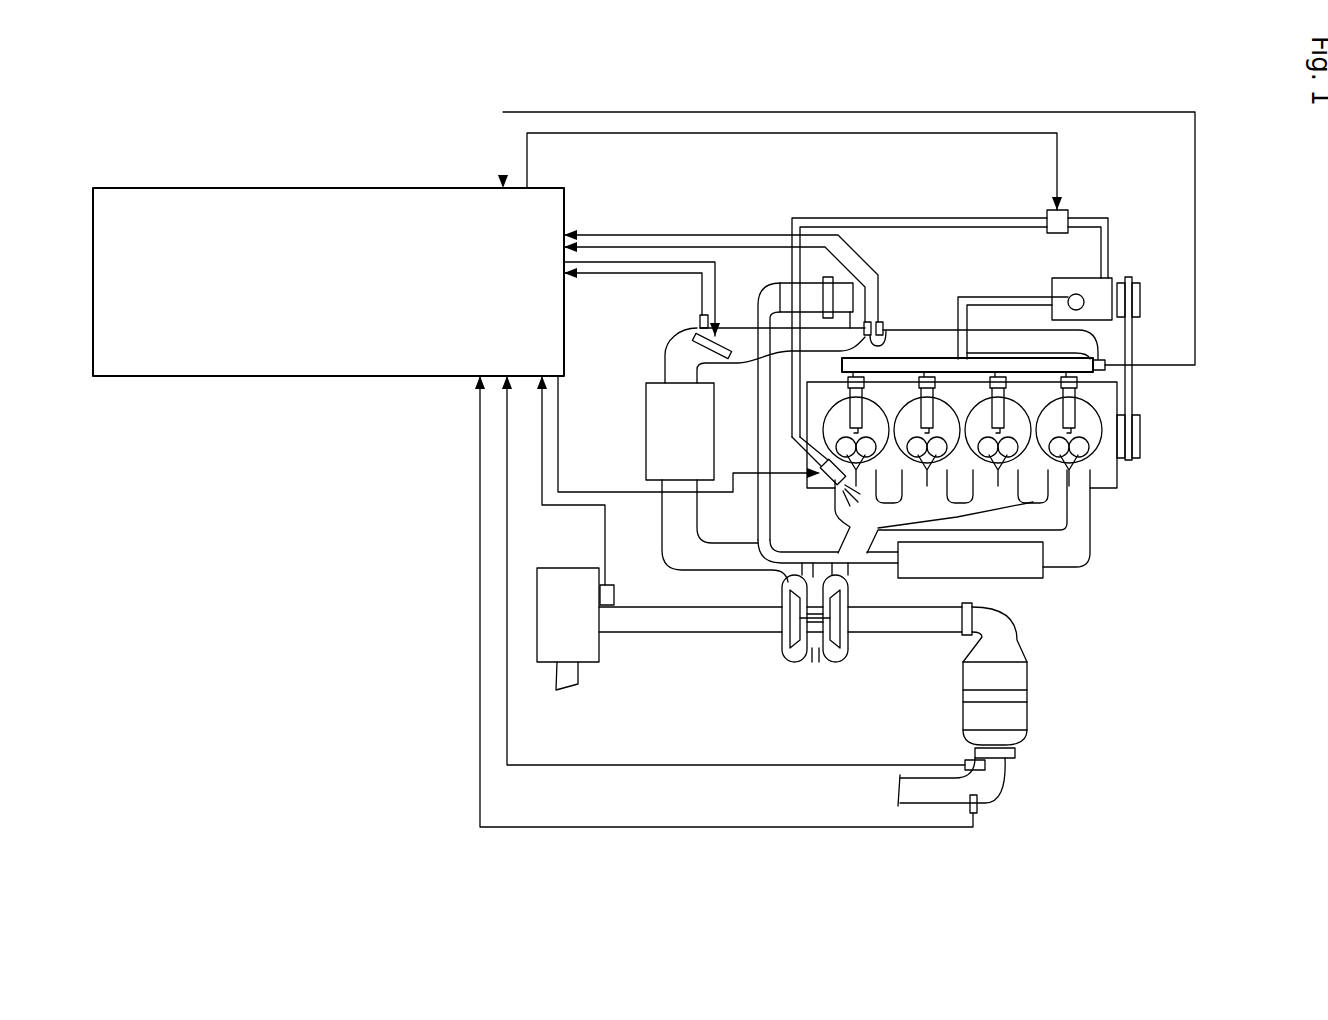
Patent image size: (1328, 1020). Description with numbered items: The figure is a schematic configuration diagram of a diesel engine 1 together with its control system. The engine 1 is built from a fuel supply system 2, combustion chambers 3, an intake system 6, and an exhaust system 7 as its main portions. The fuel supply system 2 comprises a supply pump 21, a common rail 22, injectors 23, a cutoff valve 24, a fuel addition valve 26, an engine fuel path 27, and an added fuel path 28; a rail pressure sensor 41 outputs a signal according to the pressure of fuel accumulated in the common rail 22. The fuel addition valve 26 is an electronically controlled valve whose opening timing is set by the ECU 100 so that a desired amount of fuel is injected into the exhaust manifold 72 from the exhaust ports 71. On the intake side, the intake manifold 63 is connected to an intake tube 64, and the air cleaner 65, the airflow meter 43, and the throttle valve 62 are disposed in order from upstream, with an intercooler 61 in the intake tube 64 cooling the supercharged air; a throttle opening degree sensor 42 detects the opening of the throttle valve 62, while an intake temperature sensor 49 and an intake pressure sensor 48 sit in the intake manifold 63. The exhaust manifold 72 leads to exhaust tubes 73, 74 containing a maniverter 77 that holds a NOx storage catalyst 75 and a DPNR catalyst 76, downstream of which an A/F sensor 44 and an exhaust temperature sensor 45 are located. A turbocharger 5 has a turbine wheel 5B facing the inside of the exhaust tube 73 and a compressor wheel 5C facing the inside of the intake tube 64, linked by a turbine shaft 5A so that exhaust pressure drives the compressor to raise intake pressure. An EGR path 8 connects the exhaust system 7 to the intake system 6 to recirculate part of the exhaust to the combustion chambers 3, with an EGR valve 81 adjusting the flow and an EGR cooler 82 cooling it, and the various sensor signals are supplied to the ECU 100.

The engine 1 is at (1120, 489).
The fuel supply system 2 is at (1114, 278).
The combustion chamber 3 is at (1108, 442).
The turbocharger 5 is at (820, 648).
The turbine shaft 5A is at (848, 640).
The turbine wheel 5B is at (843, 665).
The compressor wheel 5C is at (782, 655).
The intake system 6 is at (918, 326).
The exhaust system 7 is at (1094, 514).
The exhaust gas recirculation path 8 is at (1044, 561).
The supply pump 21 is at (1064, 280).
The common rail 22 is at (1108, 342).
The injector 23 is at (1078, 396).
The cutoff valve 24 is at (1076, 211).
The fuel addition valve 26 is at (770, 490).
The engine fuel path 27 is at (1012, 297).
The added fuel path 28 is at (985, 216).
The rail pressure sensor 41 is at (1112, 371).
The throttle opening degree sensor 42 is at (698, 318).
The airflow meter 43 is at (616, 602).
The A/F sensor 44 is at (980, 812).
The exhaust temperature sensor 45 is at (962, 757).
The intake pressure sensor 48 is at (872, 321).
The intake temperature sensor 49 is at (758, 362).
The intercooler 61 is at (645, 417).
The throttle valve 62 is at (662, 330).
The intake manifold 63 is at (1140, 332).
The intake tube 64 is at (655, 354).
The air cleaner 65 is at (553, 568).
The exhaust port 71 is at (1005, 500).
The exhaust manifold 72 is at (838, 520).
The exhaust tube 73 is at (920, 614).
The exhaust tube 74 is at (1008, 788).
The NOx storage catalyst 75 is at (1020, 673).
The DPNR catalyst 76 is at (1020, 716).
The maniverter 77 is at (1052, 683).
The EGR valve 81 is at (785, 285).
The EGR cooler 82 is at (1012, 580).
The ECU 100 is at (228, 188).